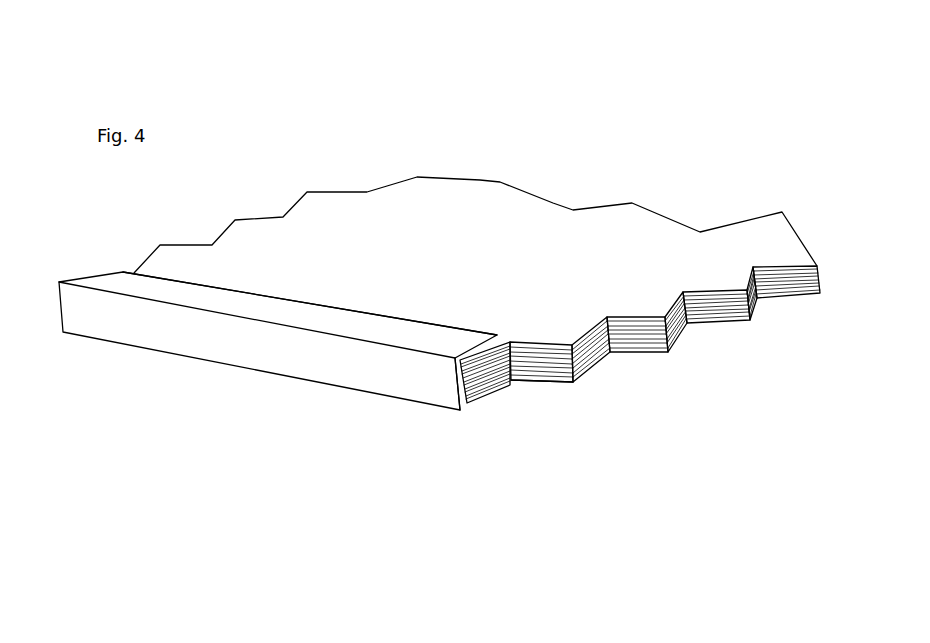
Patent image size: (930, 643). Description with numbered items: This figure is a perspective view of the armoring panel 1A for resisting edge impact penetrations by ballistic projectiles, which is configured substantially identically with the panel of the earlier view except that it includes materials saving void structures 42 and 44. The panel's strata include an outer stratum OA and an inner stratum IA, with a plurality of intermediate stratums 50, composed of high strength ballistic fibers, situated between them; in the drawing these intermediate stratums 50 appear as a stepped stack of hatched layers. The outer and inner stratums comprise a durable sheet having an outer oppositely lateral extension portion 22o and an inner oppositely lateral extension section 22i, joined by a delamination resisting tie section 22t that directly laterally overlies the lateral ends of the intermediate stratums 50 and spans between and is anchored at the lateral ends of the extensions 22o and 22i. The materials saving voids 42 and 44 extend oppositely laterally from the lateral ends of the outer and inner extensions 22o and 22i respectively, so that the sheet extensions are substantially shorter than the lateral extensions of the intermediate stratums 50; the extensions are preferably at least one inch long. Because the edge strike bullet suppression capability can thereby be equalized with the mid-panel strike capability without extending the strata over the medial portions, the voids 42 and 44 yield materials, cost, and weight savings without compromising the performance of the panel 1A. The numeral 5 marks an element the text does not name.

The armoring panel 1A is at (335, 183).
The optical sheet 5 is at (345, 284).
The materials saving void structure 42 is at (272, 258).
The outer stratum OA is at (182, 293).
The delamination resisting tie section 22t is at (482, 393).
The outer oppositely lateral extension portion 22o is at (510, 342).
The materials saving void structure 44 is at (507, 380).
The intermediate stratums 50 is at (650, 338).
The inner oppositely lateral extension section 22i is at (490, 395).
The inner stratum IA is at (483, 393).